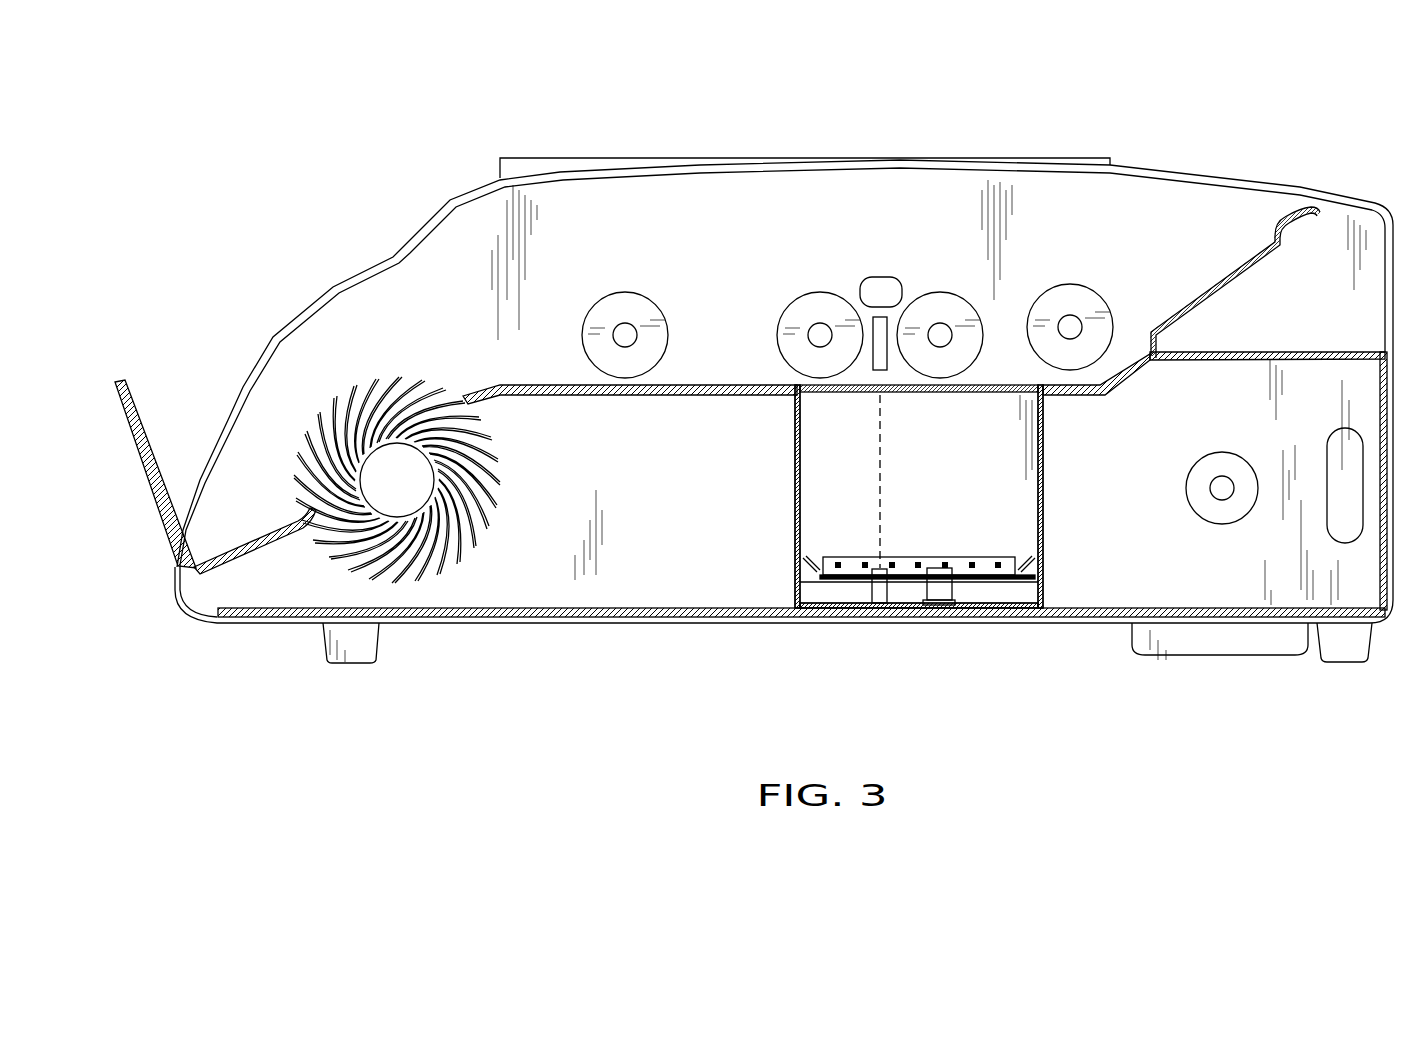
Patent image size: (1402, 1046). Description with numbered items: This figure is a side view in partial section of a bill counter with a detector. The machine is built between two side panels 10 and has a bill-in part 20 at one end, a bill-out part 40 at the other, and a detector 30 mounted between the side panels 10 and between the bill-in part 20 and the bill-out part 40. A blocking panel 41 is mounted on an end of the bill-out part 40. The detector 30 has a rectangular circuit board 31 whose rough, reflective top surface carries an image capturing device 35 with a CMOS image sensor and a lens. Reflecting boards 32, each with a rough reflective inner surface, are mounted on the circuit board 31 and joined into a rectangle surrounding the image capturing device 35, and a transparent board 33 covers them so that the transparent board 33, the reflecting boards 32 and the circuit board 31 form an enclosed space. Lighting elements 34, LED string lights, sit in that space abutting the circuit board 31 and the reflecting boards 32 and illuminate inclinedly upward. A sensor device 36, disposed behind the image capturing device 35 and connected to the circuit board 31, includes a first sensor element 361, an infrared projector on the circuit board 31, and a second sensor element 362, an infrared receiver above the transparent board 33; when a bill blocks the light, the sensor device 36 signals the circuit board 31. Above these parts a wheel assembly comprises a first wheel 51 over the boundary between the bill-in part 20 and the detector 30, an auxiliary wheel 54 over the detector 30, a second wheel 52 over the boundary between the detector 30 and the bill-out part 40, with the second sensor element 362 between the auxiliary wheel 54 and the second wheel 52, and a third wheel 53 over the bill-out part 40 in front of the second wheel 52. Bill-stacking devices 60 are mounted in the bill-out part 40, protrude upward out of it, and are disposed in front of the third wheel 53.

The side panel 10 is at (570, 197).
The bill-in part 20 is at (1310, 213).
The detector 30 is at (947, 488).
The circuit board 31 is at (990, 598).
The reflecting board 32 is at (800, 495).
The transparent board 33 is at (988, 392).
The lighting element 34 is at (1040, 566).
The image capturing device 35 is at (940, 600).
The sensor device 36 is at (893, 628).
The first sensor element 361 is at (878, 597).
The second sensor element 362 is at (878, 360).
The bill-out part 40 is at (690, 386).
The blocking panel 41 is at (170, 505).
The first wheel 51 is at (1080, 353).
The second wheel 52 is at (812, 310).
The third wheel 53 is at (637, 363).
The auxiliary wheel 54 is at (946, 365).
The bill-stacking device 60 is at (432, 577).